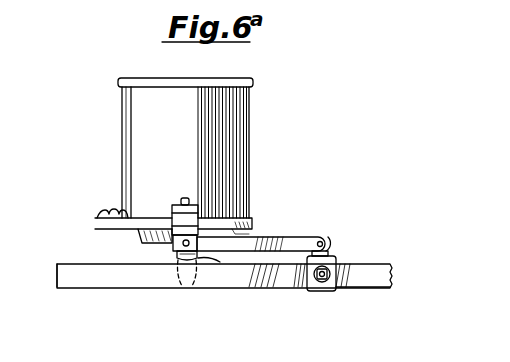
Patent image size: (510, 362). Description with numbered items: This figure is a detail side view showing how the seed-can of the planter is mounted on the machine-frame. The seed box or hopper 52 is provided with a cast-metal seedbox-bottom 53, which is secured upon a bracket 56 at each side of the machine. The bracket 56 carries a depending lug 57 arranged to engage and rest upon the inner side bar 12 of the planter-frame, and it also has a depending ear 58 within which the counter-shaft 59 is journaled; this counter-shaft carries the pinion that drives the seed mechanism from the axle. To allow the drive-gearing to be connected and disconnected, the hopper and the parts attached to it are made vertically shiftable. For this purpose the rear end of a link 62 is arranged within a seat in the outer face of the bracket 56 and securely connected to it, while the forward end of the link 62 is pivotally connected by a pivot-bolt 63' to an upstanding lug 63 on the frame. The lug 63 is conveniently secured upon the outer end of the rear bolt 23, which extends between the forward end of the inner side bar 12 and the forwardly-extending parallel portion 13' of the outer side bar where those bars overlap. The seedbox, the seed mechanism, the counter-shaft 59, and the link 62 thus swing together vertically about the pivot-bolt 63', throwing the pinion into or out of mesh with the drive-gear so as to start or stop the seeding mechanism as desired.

The inner side bar 12 is at (167, 283).
The forwardly-extending parallel portion 13' is at (363, 304).
The bolt 23 is at (331, 272).
The seed box 52 is at (232, 132).
The seedbox-bottom 53 is at (245, 229).
The bracket 56 is at (175, 247).
The depending lug 57 is at (178, 259).
The depending ear 58 is at (188, 276).
The counter-shaft 59 is at (212, 258).
The link 62 is at (292, 239).
The upstanding lug 63 is at (348, 249).
The pivot-bolt 63' is at (364, 218).